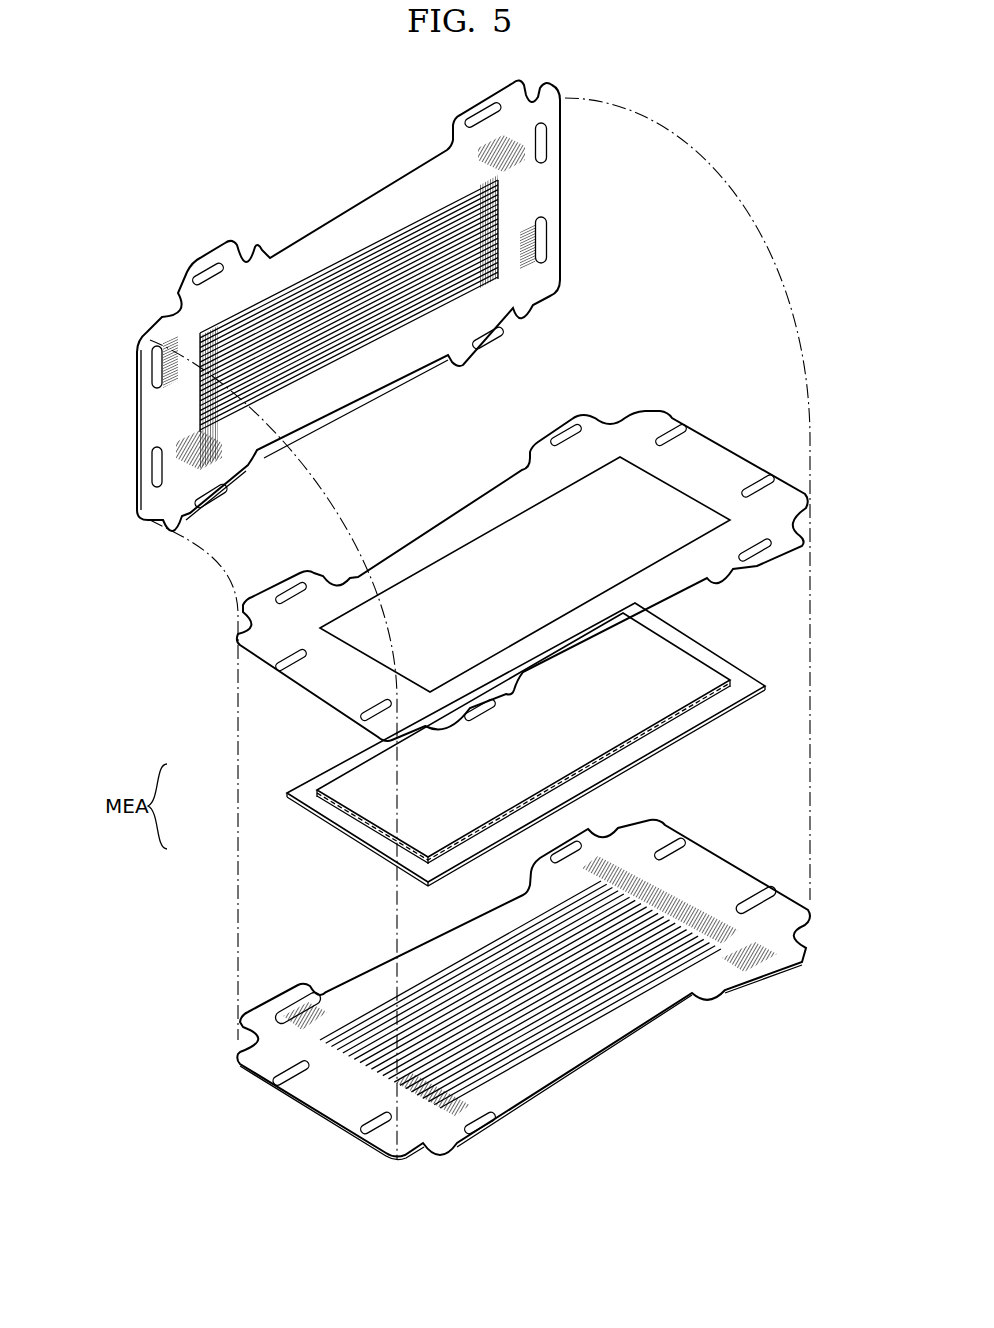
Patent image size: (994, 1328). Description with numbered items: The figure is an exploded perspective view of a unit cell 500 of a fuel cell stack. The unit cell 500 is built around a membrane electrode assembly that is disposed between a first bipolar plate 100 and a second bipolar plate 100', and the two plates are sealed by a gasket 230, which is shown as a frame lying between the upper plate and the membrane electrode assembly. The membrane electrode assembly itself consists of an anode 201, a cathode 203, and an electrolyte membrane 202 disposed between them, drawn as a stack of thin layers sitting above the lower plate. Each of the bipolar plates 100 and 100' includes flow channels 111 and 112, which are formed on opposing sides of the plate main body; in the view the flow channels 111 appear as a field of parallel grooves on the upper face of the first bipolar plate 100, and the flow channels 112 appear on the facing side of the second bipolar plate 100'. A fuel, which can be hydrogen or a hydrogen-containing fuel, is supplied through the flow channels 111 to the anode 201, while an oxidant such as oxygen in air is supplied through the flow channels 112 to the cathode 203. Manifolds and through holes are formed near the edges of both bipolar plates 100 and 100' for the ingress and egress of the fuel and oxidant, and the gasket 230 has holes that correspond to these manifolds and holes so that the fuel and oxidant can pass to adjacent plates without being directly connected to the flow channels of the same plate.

The unit cell 500 is at (608, 1289).
The second bipolar plate 100' is at (348, 305).
The flow channels 112 is at (383, 352).
The gasket 230 is at (712, 452).
The cathode 203 is at (337, 782).
The electrolyte membrane 202 is at (287, 795).
The anode 201 is at (336, 813).
The flow channels 111 is at (448, 968).
The first bipolar plate 100 is at (523, 990).